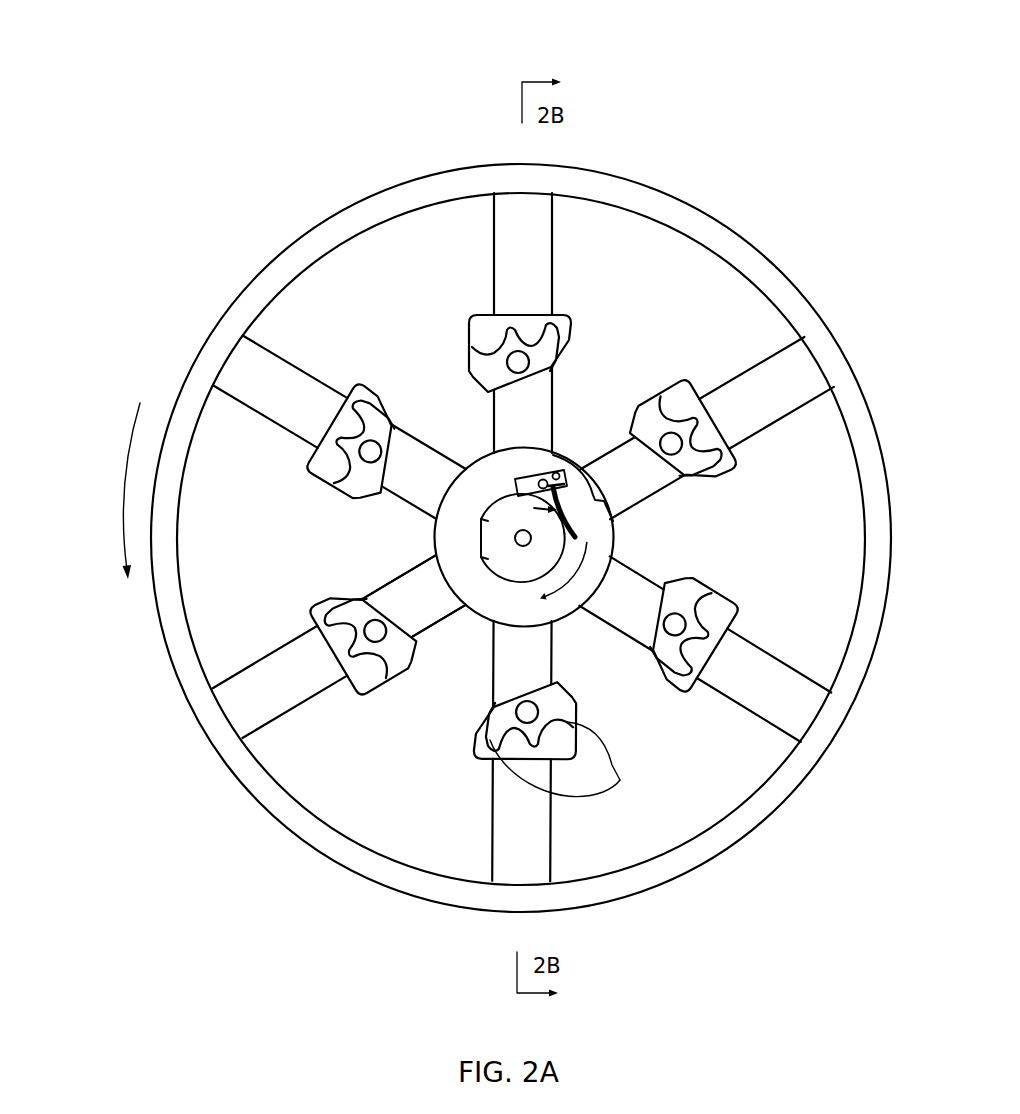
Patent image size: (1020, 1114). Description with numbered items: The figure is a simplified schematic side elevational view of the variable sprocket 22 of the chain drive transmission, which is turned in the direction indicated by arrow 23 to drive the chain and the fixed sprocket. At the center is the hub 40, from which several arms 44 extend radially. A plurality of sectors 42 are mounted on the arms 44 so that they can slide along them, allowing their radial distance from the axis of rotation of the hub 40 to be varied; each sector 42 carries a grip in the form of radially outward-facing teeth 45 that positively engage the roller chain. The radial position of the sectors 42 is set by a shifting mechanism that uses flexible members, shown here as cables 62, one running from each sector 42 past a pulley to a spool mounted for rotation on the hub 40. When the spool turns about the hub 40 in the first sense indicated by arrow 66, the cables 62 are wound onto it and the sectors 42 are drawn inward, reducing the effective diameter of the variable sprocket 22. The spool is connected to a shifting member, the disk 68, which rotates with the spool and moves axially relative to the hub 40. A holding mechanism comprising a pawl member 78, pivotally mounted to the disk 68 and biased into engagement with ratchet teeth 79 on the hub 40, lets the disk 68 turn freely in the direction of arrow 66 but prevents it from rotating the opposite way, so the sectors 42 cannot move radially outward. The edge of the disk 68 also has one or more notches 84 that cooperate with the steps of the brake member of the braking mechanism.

The variable sprocket 22 is at (524, 45).
The arrow indicating direction of rotation 23 is at (110, 478).
The hub 40 is at (498, 537).
The sectors 42 is at (490, 330).
The arms 44 is at (520, 222).
The teeth 45 is at (620, 780).
The cables 62 is at (417, 597).
The arrow indicating first sense of spool rotation 66 is at (573, 577).
The disk 68 is at (485, 590).
The pawl member 78 is at (516, 486).
The ratchet teeth 79 is at (480, 521).
The notches 84 is at (603, 498).